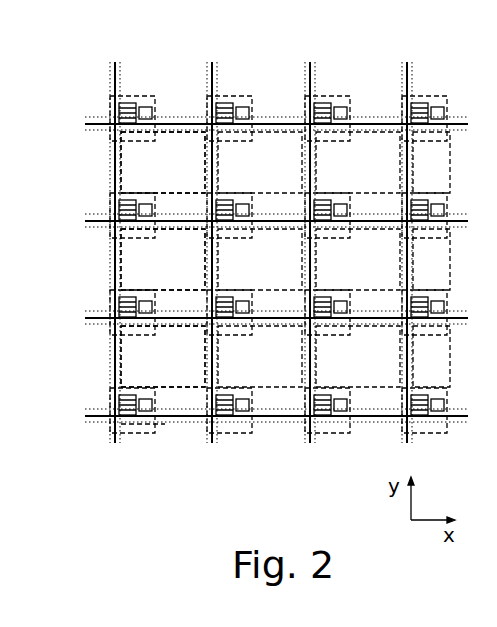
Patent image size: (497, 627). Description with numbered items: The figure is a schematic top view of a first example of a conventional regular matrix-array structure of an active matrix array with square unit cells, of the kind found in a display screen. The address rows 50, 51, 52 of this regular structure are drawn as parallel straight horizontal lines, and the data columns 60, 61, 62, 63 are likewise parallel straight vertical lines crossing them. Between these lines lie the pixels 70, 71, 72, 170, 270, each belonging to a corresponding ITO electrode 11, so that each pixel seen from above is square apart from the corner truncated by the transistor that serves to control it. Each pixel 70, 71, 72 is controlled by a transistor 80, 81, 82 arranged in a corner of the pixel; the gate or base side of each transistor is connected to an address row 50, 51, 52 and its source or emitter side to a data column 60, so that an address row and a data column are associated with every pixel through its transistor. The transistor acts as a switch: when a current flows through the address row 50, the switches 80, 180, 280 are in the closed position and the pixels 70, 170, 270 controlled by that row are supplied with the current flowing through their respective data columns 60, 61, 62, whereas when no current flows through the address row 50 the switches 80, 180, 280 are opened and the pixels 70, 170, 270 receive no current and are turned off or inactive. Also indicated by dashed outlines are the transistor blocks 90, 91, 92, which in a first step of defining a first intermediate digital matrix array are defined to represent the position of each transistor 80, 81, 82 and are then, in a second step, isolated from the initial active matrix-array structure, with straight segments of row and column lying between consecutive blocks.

The ITO electrode 11 is at (128, 157).
The address row 50 is at (97, 224).
The address row 51 is at (90, 321).
The address row 52 is at (92, 418).
The data column 60 is at (115, 66).
The data column 61 is at (212, 66).
The data column 62 is at (310, 66).
The data column 63 is at (407, 66).
The pixel 70 is at (191, 186).
The pixel 71 is at (191, 286).
The pixel 72 is at (193, 385).
The pixel 170 is at (295, 186).
The pixel 270 is at (395, 186).
The transistor 80 is at (118, 201).
The transistor 81 is at (113, 322).
The transistor 82 is at (130, 404).
The transistor 180 is at (227, 226).
The transistor 280 is at (325, 226).
The transistor block 90 is at (136, 242).
The transistor block 91 is at (136, 341).
The transistor block 92 is at (150, 432).